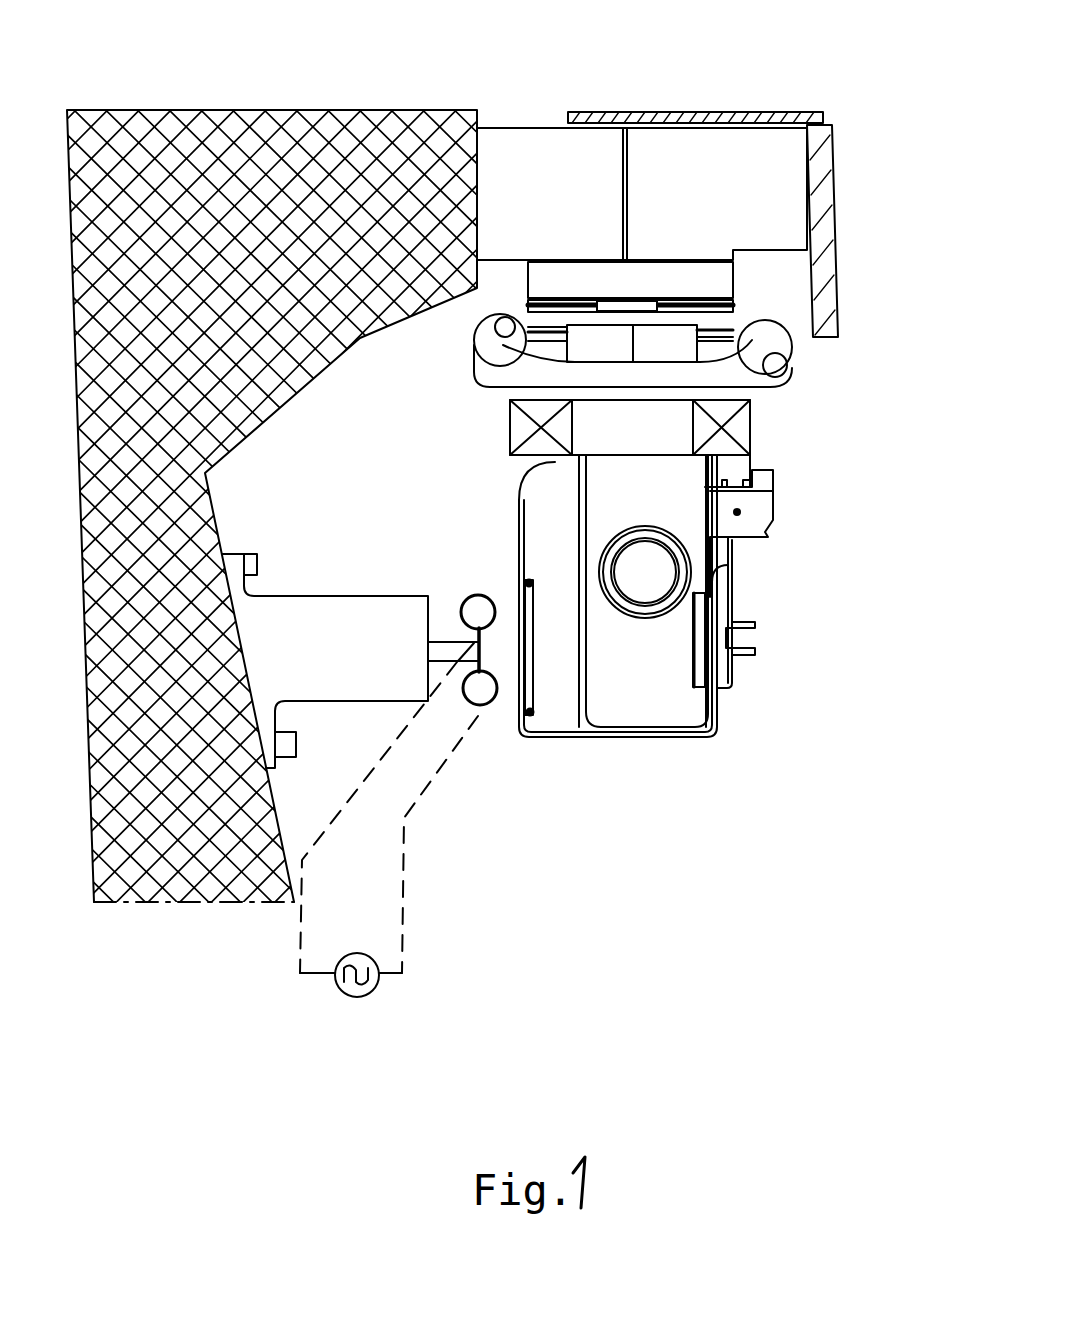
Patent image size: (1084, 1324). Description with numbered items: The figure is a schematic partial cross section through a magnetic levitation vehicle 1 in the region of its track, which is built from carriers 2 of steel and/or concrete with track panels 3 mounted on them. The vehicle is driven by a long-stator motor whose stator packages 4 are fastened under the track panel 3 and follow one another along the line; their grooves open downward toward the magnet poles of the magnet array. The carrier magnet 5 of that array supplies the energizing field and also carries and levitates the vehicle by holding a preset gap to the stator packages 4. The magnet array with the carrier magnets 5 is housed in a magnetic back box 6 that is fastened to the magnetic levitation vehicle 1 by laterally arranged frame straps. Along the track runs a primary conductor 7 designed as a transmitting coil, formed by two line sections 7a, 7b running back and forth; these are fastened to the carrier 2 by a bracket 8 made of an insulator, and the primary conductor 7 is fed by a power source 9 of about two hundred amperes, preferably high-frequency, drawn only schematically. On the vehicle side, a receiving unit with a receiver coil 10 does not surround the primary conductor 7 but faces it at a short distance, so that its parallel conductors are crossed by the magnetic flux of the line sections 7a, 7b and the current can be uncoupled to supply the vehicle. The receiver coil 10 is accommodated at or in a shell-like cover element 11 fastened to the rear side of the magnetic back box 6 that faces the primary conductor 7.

The magnetic levitation vehicle 1 is at (790, 560).
The carrier 2 is at (205, 910).
The track panel 3 is at (715, 112).
The stator package 4 is at (660, 342).
The carrier magnet 5 is at (652, 432).
The magnetic back box 6 is at (673, 632).
The primary conductor 7 is at (527, 751).
The line section 7a is at (488, 593).
The line section 7b is at (504, 718).
The bracket 8 is at (320, 650).
The power source 9 is at (367, 997).
The receiver coil 10 is at (532, 690).
The cover element 11 is at (530, 468).